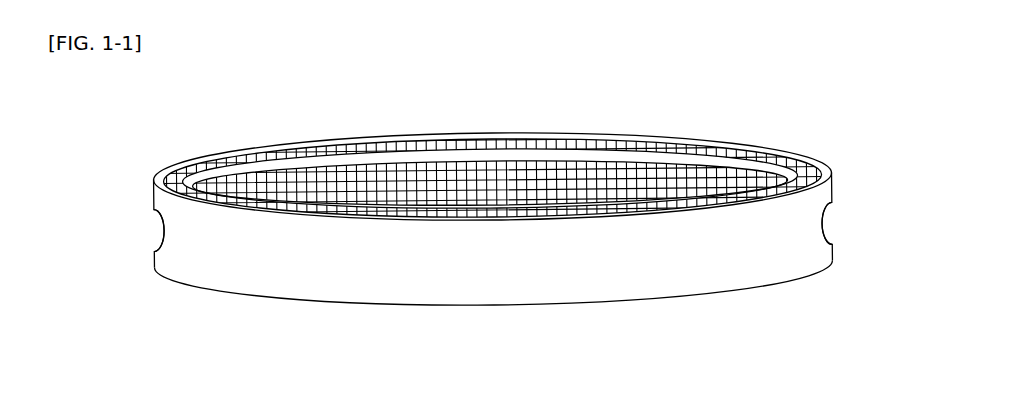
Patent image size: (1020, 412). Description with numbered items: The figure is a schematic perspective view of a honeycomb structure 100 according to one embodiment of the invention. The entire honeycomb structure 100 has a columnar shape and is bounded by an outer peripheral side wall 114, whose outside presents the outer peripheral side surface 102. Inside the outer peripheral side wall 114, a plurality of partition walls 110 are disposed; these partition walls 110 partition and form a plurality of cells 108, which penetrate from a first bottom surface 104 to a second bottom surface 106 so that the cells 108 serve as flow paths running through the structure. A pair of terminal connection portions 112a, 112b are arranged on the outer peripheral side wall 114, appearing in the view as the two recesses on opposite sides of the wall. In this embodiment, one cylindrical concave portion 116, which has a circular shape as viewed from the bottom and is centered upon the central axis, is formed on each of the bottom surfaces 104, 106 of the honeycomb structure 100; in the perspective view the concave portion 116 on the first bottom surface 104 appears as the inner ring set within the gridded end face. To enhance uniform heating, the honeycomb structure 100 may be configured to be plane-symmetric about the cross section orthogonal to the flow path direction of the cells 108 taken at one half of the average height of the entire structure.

The honeycomb structure 100 is at (494, 219).
The outer peripheral side surface 102 is at (257, 282).
The first bottom surface 104 is at (488, 127).
The second bottom surface 106 is at (460, 317).
The cells 108 is at (675, 153).
The partition walls 110 is at (600, 148).
The terminal connection portion 112a is at (150, 229).
The terminal connection portion 112b is at (833, 222).
The outer peripheral side wall 114 is at (823, 165).
The cylindrical concave portion 116 is at (441, 149).